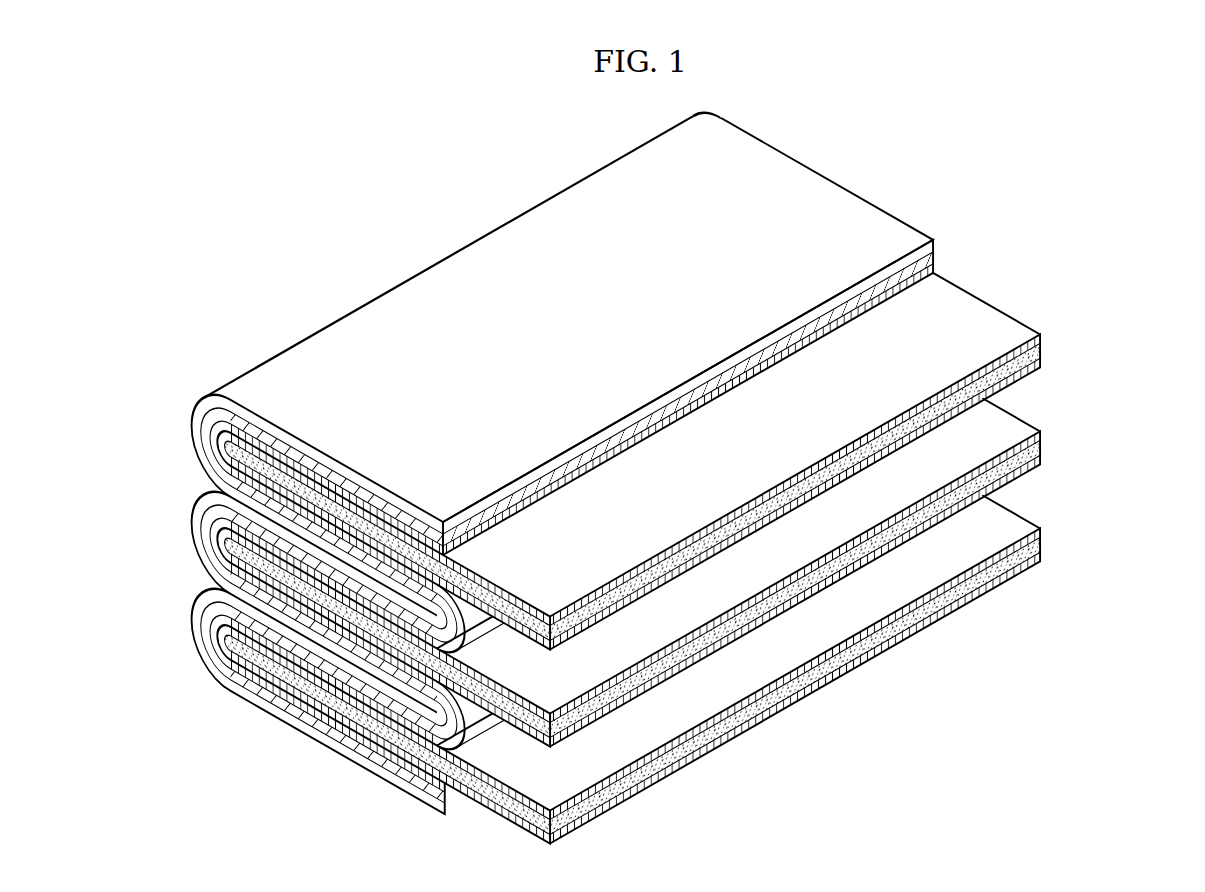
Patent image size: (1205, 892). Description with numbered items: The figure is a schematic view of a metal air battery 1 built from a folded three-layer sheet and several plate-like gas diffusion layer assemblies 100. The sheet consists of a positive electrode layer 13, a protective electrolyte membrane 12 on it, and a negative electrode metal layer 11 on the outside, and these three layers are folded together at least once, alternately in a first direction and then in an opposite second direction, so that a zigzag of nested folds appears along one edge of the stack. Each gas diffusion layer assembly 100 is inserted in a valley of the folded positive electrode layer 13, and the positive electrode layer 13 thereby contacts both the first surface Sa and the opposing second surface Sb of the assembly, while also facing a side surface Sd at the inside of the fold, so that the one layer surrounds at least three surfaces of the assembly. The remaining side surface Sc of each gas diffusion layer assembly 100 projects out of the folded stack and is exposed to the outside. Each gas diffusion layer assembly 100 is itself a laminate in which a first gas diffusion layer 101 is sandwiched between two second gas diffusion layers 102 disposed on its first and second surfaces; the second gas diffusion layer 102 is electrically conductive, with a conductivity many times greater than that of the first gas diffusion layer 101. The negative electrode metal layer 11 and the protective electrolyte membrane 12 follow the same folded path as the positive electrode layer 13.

The metal air battery 1 is at (259, 229).
The negative electrode metal layer 11 is at (208, 401).
The protective electrolyte membrane 12 is at (218, 431).
The positive electrode layer 13 is at (222, 447).
The gas diffusion layer assembly 100 is at (1108, 305).
The first gas diffusion layer 101 is at (1041, 350).
The second gas diffusion layer 102 is at (1040, 334).
The first surface Sa is at (290, 465).
The second surface Sb is at (358, 490).
The side surface Sc is at (752, 522).
The side surface Sd is at (208, 563).